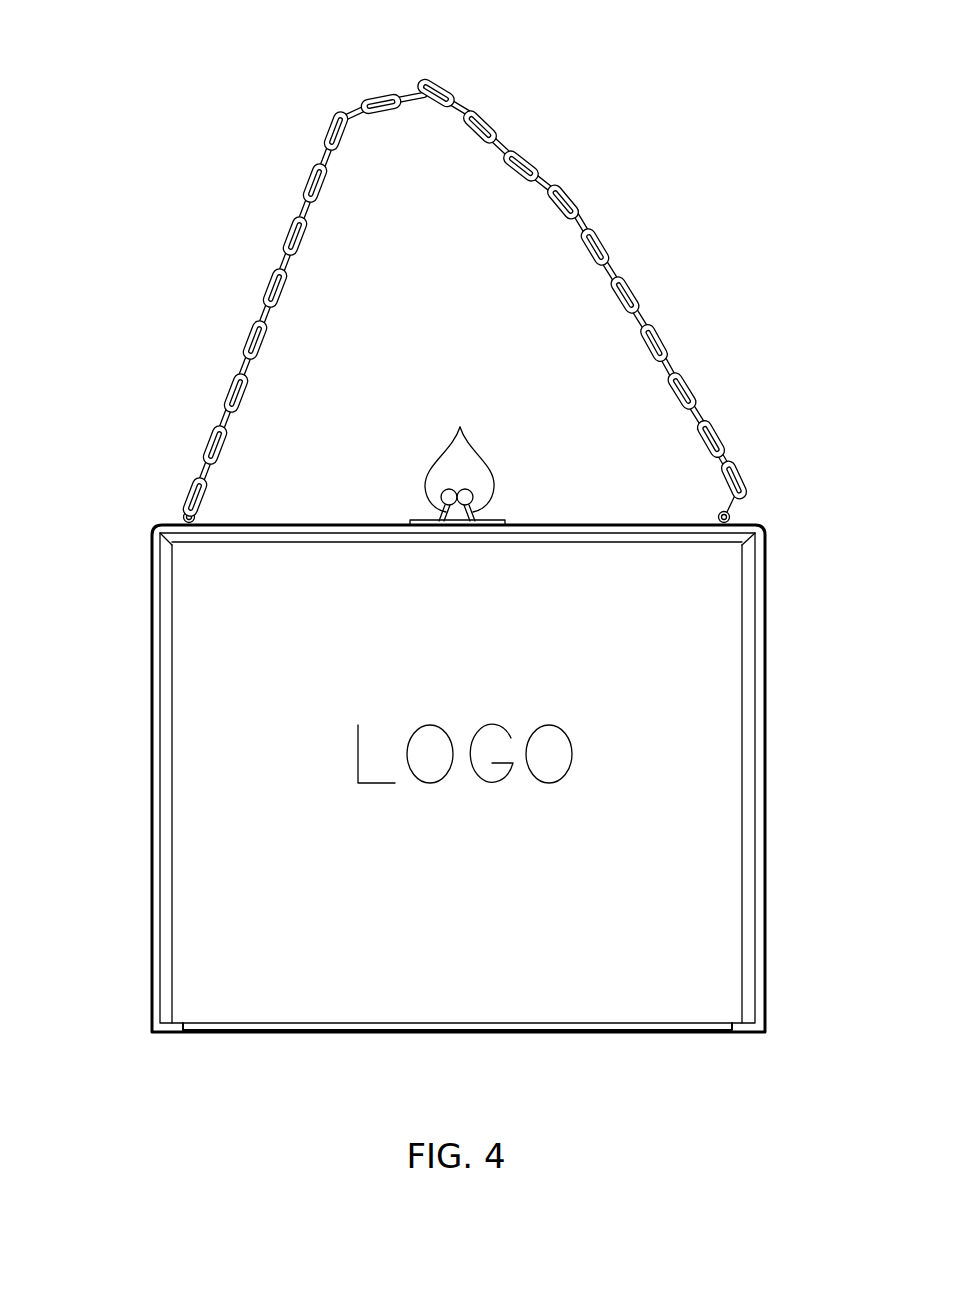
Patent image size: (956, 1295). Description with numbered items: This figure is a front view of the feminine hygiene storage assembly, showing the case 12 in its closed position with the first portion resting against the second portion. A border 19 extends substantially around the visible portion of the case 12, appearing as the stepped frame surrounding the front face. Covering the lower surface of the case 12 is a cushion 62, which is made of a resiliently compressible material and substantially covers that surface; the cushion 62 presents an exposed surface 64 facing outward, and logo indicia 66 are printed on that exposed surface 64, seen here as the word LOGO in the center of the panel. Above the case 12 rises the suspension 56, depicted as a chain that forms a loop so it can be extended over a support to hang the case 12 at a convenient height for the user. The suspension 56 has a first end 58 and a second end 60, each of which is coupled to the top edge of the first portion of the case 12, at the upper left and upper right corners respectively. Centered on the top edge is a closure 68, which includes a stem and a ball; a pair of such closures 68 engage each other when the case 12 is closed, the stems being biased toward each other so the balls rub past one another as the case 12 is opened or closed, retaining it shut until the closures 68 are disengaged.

The case 12 is at (118, 581).
The border 19 is at (163, 698).
The suspension 56 is at (445, 95).
The first end 58 is at (183, 516).
The second end 60 is at (730, 519).
The cushion 62 is at (300, 982).
The exposed surface 64 is at (295, 598).
The logo indicia 66 is at (285, 767).
The closure 68 is at (460, 428).